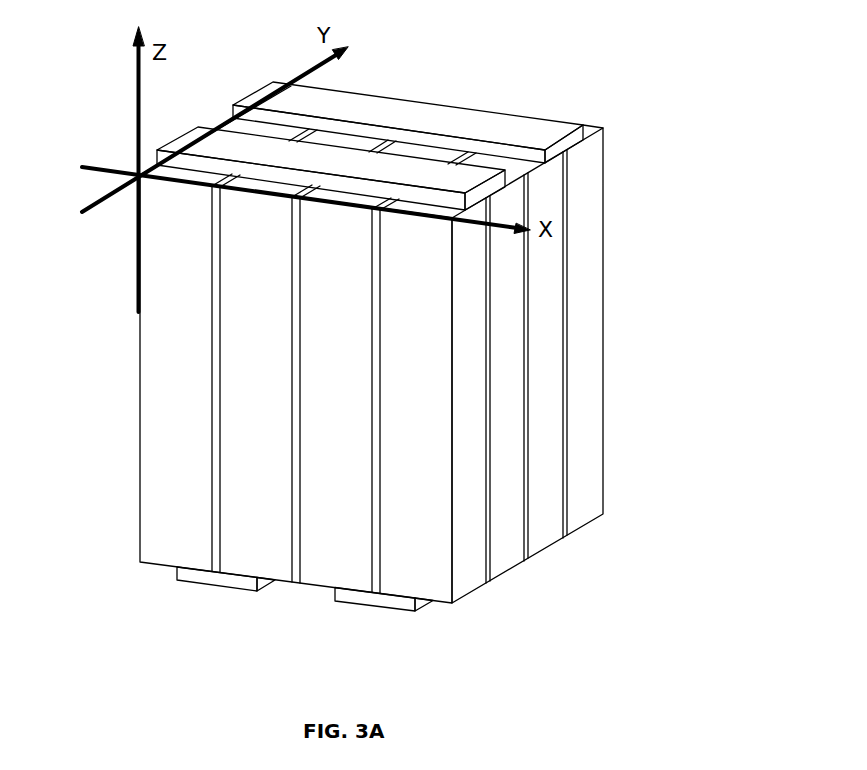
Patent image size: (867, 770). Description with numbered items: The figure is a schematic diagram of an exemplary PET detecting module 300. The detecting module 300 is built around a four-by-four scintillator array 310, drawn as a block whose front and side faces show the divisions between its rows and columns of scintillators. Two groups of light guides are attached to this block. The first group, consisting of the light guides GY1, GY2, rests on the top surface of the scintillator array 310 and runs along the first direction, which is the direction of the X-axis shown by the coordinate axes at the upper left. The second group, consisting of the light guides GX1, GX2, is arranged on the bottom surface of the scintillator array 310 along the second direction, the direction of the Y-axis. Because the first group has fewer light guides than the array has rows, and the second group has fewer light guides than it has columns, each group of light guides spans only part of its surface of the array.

The detecting module 300 is at (617, 56).
The scintillator array 310 is at (603, 302).
The light guide GY1 is at (405, 170).
The light guide GY2 is at (520, 125).
The light guide GX1 is at (215, 577).
The light guide GX2 is at (397, 603).